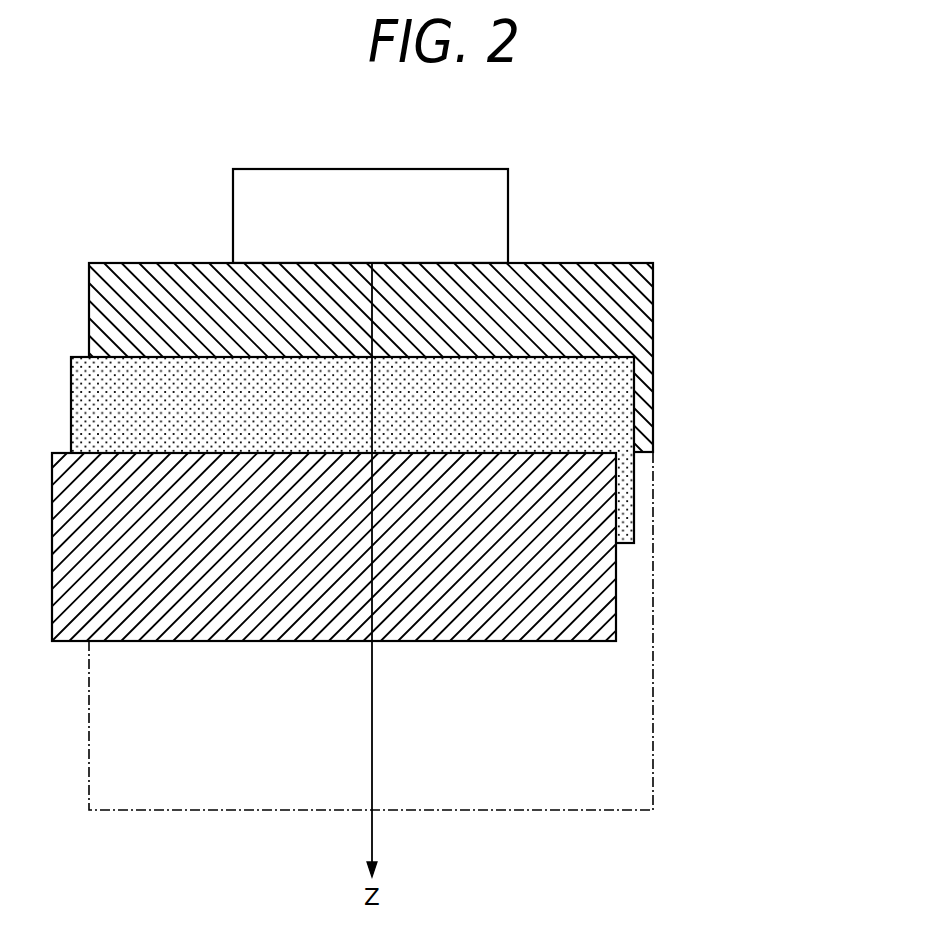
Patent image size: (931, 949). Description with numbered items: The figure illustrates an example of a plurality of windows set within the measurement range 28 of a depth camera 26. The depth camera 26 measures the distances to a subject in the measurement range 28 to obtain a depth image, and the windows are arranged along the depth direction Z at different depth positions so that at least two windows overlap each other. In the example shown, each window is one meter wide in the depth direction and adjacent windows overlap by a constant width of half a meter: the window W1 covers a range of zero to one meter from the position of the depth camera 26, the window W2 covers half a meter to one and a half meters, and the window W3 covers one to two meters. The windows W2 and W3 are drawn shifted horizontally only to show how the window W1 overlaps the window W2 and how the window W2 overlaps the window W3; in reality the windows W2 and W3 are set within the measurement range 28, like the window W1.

The depth camera 26 is at (508, 215).
The measurement range 28 is at (653, 773).
The window W1 is at (775, 263).
The window W2 is at (720, 356).
The window W3 is at (663, 452).